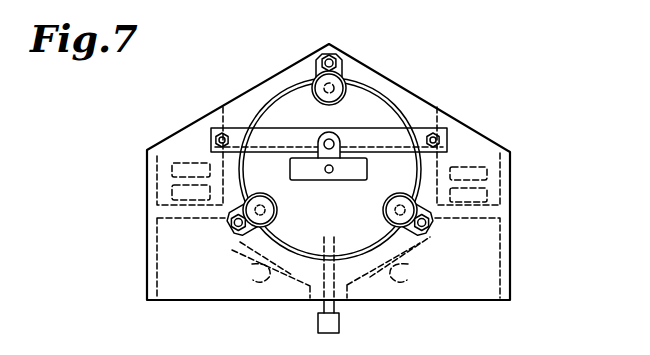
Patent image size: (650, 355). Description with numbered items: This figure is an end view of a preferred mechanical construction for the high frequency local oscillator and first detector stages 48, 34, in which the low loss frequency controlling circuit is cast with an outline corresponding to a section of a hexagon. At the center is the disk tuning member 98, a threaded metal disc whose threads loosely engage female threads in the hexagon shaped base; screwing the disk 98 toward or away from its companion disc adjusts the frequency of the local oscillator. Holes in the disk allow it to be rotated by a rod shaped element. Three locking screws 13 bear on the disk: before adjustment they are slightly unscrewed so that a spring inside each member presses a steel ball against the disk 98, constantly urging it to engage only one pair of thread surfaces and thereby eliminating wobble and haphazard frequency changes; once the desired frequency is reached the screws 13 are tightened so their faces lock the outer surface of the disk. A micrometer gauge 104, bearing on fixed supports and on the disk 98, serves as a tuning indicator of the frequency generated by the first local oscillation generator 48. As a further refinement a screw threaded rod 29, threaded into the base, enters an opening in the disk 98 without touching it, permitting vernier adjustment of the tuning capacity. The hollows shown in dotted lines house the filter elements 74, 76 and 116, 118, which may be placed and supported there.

The disk tuning member 98 is at (386, 110).
The locking screws 13 is at (315, 102).
The micrometer gauge 104 is at (329, 179).
The filter element 76 is at (172, 172).
The filter element 74 is at (172, 192).
The filter element 118 is at (487, 175).
The filter element 116 is at (487, 198).
The first local oscillation generator 48 is at (250, 270).
The first detector stage 34 is at (410, 270).
The screw threaded rod 29 is at (340, 327).